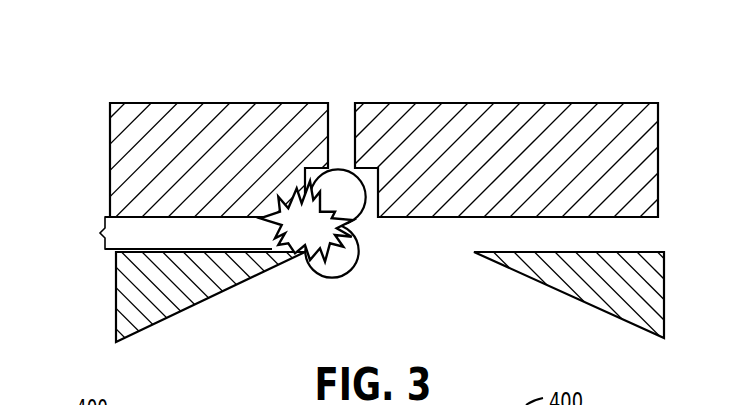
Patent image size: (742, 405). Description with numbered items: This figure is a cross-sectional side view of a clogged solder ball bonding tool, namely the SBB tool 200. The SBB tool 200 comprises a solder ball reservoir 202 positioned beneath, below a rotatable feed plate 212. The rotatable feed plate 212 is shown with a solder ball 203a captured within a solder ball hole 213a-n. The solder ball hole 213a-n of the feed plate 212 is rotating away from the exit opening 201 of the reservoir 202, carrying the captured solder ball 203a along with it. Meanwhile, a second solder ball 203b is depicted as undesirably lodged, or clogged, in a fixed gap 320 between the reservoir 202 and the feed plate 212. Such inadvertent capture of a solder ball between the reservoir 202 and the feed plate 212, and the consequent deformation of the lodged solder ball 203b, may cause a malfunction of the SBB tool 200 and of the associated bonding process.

The SBB tool 200 is at (158, 75).
The rotatable feed plate 212 is at (627, 116).
The fixed gap 320 is at (168, 234).
The solder ball reservoir 202 is at (133, 289).
The solder ball 203a is at (350, 207).
The second solder ball 203b is at (333, 268).
The solder ball hole 213a-n is at (370, 193).
The exit opening 201 is at (434, 253).